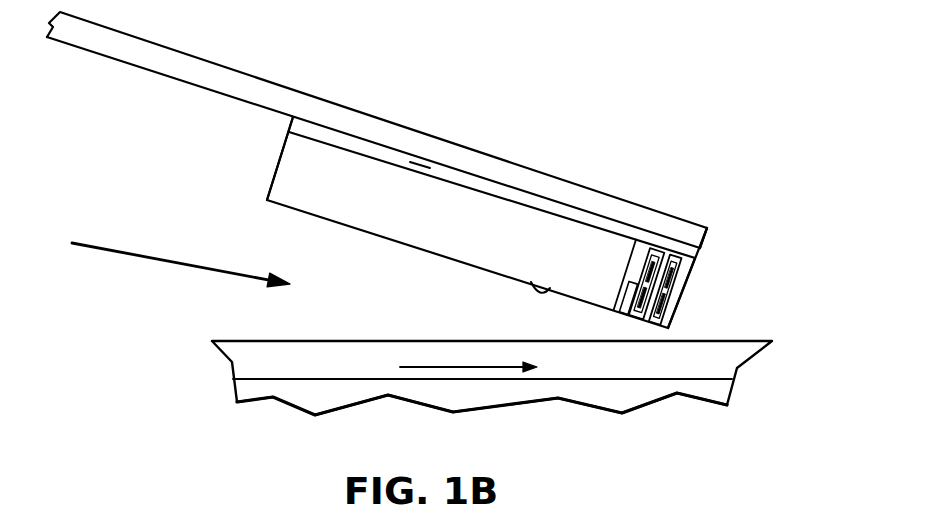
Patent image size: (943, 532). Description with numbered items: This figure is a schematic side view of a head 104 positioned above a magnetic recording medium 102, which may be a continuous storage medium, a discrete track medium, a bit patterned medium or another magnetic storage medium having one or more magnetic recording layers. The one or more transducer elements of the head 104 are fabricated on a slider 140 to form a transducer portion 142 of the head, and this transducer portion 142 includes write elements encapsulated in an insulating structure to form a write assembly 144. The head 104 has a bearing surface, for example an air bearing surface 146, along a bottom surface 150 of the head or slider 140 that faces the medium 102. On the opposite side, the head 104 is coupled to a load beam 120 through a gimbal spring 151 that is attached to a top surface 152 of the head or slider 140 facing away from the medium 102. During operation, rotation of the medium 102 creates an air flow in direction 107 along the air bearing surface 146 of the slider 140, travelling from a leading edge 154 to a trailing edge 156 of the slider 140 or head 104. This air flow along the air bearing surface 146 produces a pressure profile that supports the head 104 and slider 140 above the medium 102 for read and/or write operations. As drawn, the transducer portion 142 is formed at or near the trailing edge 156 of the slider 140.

The medium 102 is at (706, 370).
The head 104 is at (702, 210).
The direction of air flow 107 is at (467, 366).
The load beam 120 is at (313, 108).
The slider 140 is at (470, 215).
The transducer portion 142 is at (704, 262).
The write assembly 144 is at (674, 238).
The air bearing surface 146 is at (422, 258).
The bottom surface 150 is at (550, 288).
The gimbal spring 151 is at (422, 165).
The top surface 152 is at (545, 207).
The leading edge 154 is at (273, 177).
The trailing edge 156 is at (683, 285).